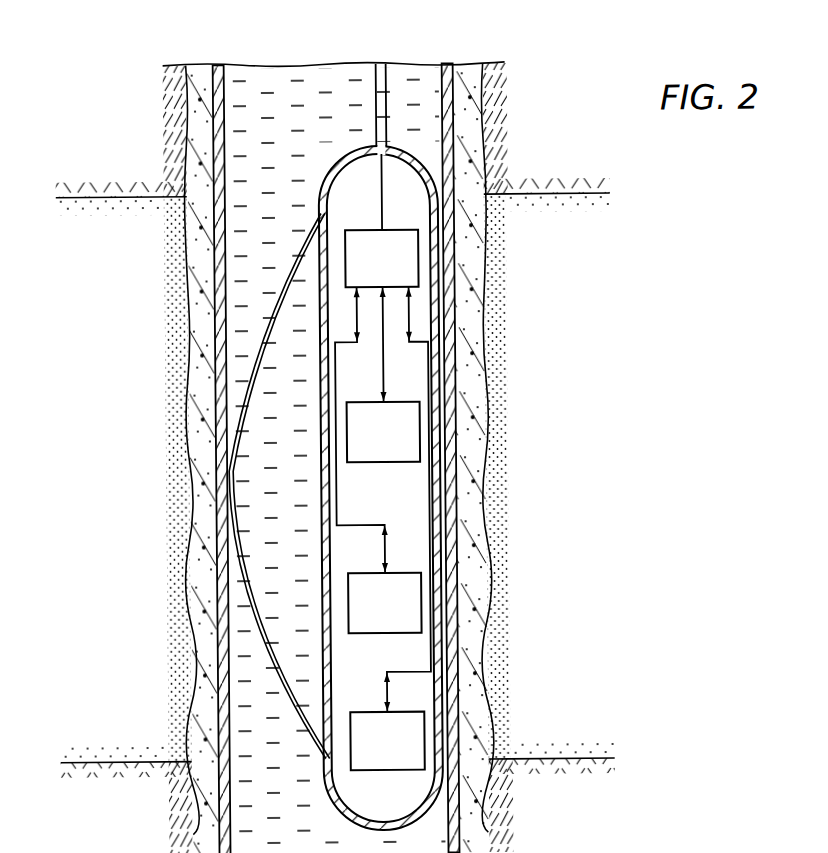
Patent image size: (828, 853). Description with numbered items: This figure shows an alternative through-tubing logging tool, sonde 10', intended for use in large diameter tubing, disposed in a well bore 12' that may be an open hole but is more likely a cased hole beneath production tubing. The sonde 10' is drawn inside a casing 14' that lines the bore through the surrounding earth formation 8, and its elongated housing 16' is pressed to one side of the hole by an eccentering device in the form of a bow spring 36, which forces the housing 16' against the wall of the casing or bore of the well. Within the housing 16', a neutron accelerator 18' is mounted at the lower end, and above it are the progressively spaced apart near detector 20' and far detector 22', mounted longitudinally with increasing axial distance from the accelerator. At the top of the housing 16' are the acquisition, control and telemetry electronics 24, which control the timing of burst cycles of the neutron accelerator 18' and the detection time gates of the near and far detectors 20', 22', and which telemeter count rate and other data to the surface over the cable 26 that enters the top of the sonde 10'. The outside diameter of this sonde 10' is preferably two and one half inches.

The earth formation 8 is at (523, 294).
The sonde 10' is at (341, 447).
The well bore 12' is at (280, 460).
The casing 14' is at (386, 457).
The housing 16' is at (359, 487).
The neutron accelerator 18' is at (450, 733).
The near detector 20' is at (450, 603).
The far detector 22' is at (452, 426).
The acquisition, control and telemetry electronics 24 is at (374, 269).
The cable 26 is at (388, 101).
The bow spring 36 is at (254, 366).